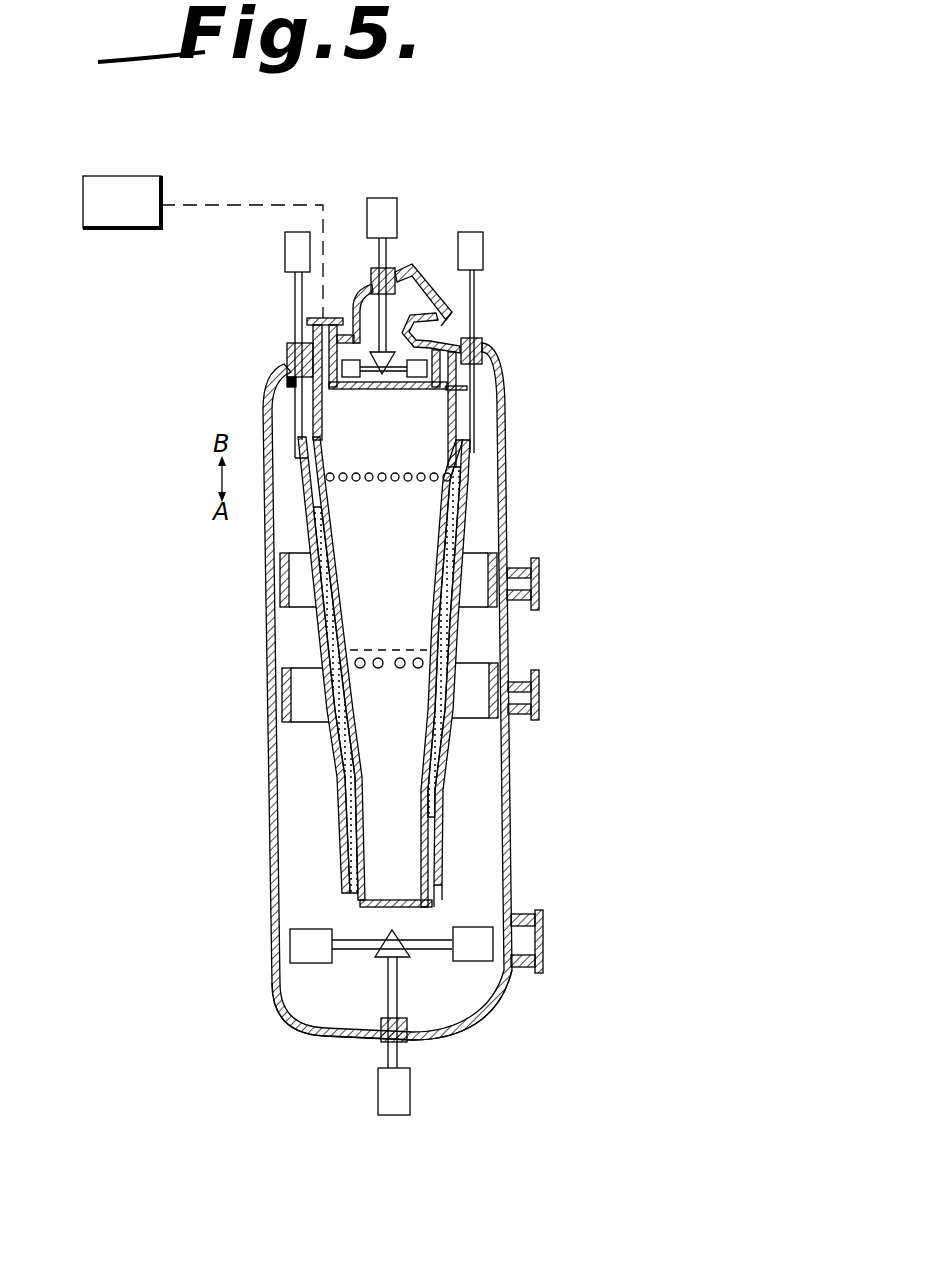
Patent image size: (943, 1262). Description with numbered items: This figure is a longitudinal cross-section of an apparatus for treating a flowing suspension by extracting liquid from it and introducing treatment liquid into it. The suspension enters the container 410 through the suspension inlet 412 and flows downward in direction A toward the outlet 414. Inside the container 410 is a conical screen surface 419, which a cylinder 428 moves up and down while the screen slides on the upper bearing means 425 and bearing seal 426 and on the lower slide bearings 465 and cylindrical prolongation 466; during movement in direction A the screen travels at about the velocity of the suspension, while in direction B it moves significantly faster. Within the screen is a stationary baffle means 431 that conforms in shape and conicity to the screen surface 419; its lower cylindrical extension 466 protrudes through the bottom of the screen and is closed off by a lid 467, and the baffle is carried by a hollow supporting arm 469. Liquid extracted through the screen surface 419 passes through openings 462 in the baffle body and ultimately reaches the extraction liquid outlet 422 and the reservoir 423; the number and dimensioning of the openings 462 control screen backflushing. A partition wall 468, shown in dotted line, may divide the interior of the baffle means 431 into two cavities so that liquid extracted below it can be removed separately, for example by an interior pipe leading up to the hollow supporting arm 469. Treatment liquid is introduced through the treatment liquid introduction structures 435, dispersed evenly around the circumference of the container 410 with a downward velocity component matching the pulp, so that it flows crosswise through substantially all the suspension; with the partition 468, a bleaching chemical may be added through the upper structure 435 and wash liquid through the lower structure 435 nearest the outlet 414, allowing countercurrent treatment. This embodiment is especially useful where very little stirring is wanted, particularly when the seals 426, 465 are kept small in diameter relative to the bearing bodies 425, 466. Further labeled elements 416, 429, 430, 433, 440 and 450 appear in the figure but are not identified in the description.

The container 410 is at (509, 772).
The suspension inlet 412 is at (410, 277).
The outlet 414 is at (543, 962).
The vessel bottom 416 is at (466, 1032).
The screen surface 419 is at (335, 752).
The extraction liquid outlet 422 is at (308, 322).
The reservoir 423 is at (203, 247).
The bearing means 425 is at (452, 422).
The bearing seal 426 is at (462, 458).
The cylinder 428 is at (285, 250).
The seal 429 is at (290, 380).
The bearing 430 is at (287, 351).
The stationary baffle means 431 is at (325, 642).
The support brackets 433 is at (276, 810).
The treatment liquid introduction structure 435 is at (551, 576).
The bottom agitator drive 440 is at (362, 1013).
The agitator shaft 450 is at (350, 283).
The openings 462 is at (403, 650).
The slide bearings 465 is at (440, 891).
The cylindrical prolongation 466 is at (342, 847).
The lid 467 is at (367, 918).
The partition wall 468 is at (370, 648).
The hollow supporting arm 469 is at (447, 377).